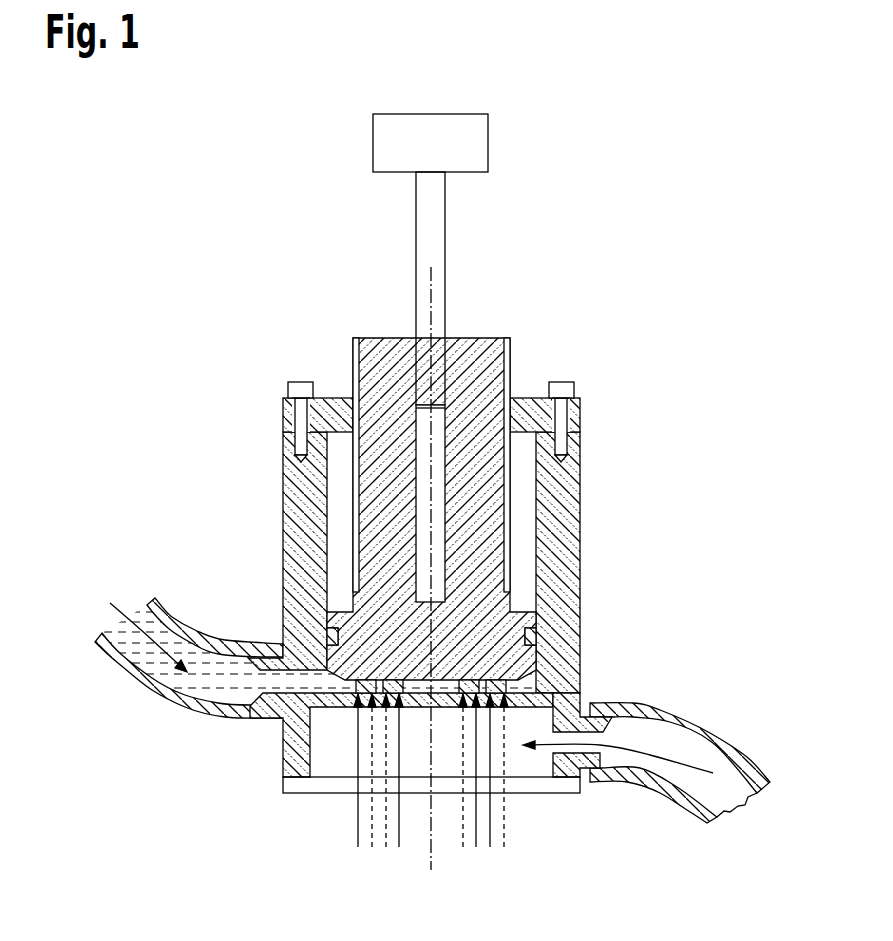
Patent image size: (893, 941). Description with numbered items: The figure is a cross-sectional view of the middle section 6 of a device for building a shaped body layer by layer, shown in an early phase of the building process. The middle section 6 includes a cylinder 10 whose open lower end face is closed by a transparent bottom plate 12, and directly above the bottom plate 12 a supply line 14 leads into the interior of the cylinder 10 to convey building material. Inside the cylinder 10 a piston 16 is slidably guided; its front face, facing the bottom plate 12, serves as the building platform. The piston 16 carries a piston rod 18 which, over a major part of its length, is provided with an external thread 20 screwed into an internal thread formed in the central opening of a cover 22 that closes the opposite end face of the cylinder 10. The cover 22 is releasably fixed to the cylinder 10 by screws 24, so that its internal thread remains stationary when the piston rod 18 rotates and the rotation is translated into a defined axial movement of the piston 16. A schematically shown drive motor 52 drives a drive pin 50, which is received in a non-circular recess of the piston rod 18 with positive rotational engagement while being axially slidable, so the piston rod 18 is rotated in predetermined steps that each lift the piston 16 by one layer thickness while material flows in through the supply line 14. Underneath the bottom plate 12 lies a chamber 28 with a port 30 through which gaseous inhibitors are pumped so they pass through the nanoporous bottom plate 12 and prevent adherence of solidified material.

The middle section 6 is at (699, 436).
The cylinder 10 is at (282, 568).
The bottom plate 12 is at (332, 707).
The supply line 14 is at (257, 707).
The piston 16 is at (525, 628).
The piston rod 18 is at (473, 338).
The external thread 20 is at (512, 375).
The cover 22 is at (282, 418).
The screws 24 is at (288, 393).
The chamber 28 is at (528, 767).
The port 30 is at (582, 712).
The drive pin 50 is at (445, 198).
The drive motor 52 is at (490, 138).